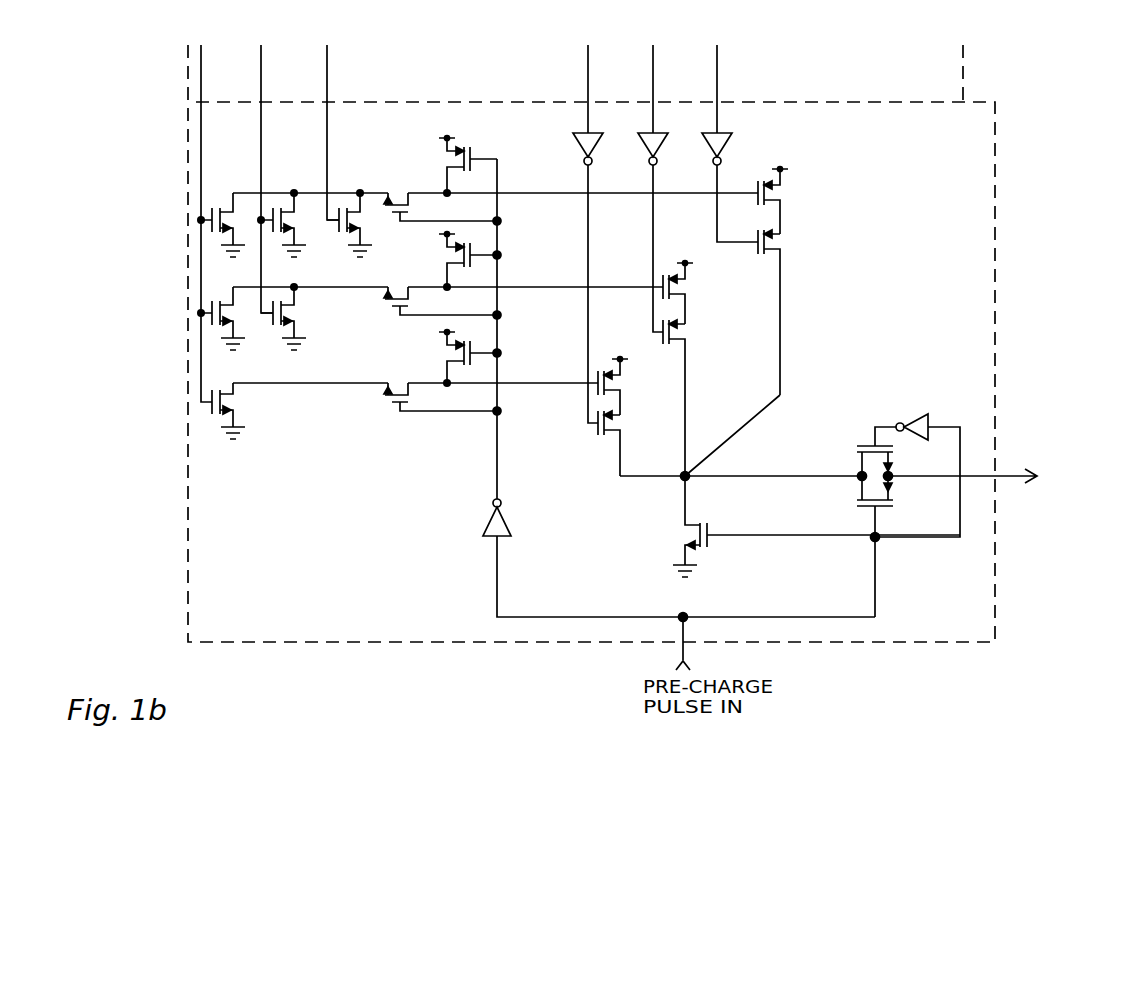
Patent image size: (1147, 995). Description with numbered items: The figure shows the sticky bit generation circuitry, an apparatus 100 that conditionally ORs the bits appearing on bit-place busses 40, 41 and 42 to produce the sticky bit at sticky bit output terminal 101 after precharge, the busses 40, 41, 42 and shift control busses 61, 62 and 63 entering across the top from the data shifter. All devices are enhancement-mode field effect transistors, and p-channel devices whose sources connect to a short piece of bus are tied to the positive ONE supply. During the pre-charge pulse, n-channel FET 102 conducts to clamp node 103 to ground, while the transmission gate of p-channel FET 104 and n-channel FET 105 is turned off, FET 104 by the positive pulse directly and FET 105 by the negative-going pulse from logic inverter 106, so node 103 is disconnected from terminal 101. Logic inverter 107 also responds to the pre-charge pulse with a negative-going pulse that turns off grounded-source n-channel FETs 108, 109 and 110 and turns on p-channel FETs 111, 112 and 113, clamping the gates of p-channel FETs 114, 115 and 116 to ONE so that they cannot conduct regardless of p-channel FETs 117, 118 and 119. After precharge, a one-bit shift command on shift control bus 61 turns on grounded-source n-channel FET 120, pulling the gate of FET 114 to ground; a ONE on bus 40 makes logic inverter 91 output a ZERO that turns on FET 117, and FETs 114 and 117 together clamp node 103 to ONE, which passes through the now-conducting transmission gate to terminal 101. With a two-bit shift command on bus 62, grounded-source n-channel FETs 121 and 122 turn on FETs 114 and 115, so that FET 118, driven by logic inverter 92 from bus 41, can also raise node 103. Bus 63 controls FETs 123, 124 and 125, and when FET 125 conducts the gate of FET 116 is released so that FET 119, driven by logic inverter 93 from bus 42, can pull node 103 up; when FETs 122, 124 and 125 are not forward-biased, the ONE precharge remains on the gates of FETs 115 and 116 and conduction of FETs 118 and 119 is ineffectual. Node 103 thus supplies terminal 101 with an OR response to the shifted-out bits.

The apparatus 100 is at (300, 630).
The shift control bus 63 is at (203, 112).
The shift control bus 62 is at (263, 112).
The shift control bus 61 is at (329, 112).
The bit-place bus 42 is at (590, 112).
The bit-place bus 41 is at (655, 112).
The bit-place bus 40 is at (719, 112).
The logic inverter 93 is at (598, 146).
The logic inverter 92 is at (663, 146).
The logic inverter 91 is at (727, 146).
The p-channel FET 111 is at (456, 165).
The p-channel FET 112 is at (457, 260).
The p-channel FET 113 is at (458, 357).
The n-channel FET 108 is at (442, 196).
The n-channel FET 109 is at (442, 292).
The n-channel FET 110 is at (442, 387).
The grounded-source-electrode n-channel FET 123 is at (230, 225).
The grounded-source-electrode n-channel FET 121 is at (292, 225).
The grounded-source-electrode n-channel FET 120 is at (358, 225).
The grounded-source-electrode n-channel FET 124 is at (231, 318).
The grounded-source-electrode n-channel FET 122 is at (294, 318).
The grounded-source-electrode n-channel FET 125 is at (238, 411).
The p-channel FET 114 is at (786, 201).
The p-channel FET 117 is at (786, 312).
The p-channel FET 115 is at (689, 293).
The p-channel FET 118 is at (690, 398).
The p-channel FET 116 is at (626, 386).
The p-channel FET 119 is at (626, 443).
The node 103 is at (690, 480).
The n-channel FET 102 is at (802, 526).
The logic inverter 107 is at (505, 515).
The logic inverter 106 is at (913, 412).
The n-channel FET 105 is at (893, 463).
The p-channel FET 104 is at (893, 506).
The sticky bit output terminal 101 is at (1026, 468).